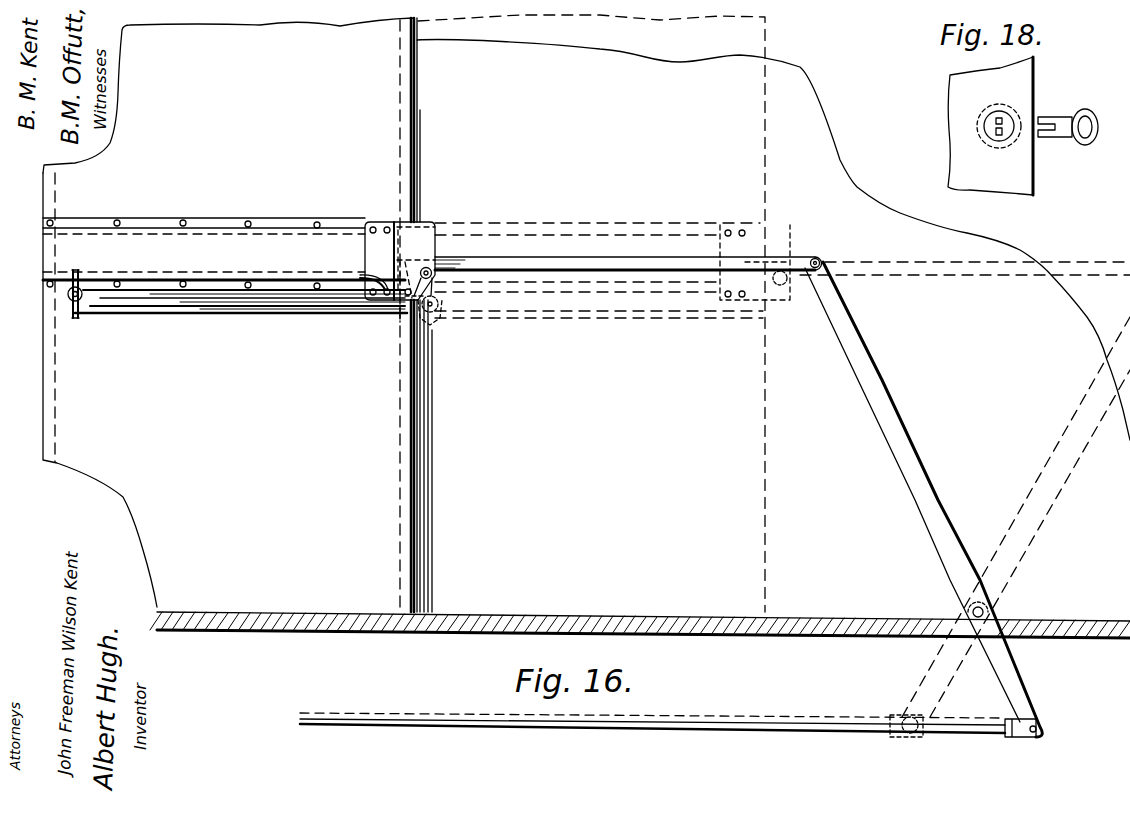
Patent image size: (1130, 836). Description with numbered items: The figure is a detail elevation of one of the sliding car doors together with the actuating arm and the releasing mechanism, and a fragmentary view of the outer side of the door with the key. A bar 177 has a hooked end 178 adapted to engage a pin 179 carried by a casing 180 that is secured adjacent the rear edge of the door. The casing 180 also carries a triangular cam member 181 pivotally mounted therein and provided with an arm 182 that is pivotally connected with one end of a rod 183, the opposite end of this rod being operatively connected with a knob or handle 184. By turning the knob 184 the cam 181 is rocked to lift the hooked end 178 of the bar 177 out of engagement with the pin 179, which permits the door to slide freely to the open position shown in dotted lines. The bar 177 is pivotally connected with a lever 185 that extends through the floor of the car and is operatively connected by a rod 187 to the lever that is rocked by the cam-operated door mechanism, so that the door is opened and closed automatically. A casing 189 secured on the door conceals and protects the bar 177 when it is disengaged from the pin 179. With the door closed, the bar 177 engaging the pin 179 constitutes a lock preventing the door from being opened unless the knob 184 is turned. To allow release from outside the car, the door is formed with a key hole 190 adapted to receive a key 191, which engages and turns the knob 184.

In FIG. 16, the bar 177 is at (585, 272).
In FIG. 16, the hooked end 178 is at (395, 270).
In FIG. 16, the pin 179 is at (437, 264).
In FIG. 16, the casing 180 is at (422, 232).
In FIG. 16, the triangular cam member 181 is at (430, 322).
In FIG. 16, the arm 182 is at (405, 312).
In FIG. 16, the rod 183 is at (213, 312).
In FIG. 16, the knob or handle 184 is at (93, 310).
In FIG. 16, the lever 185 is at (866, 353).
In FIG. 16, the rod 187 is at (712, 728).
In FIG. 16, the casing 189 is at (203, 240).
In FIG. 18, the key hole 190 is at (1010, 120).
In FIG. 18, the key 191 is at (1096, 122).